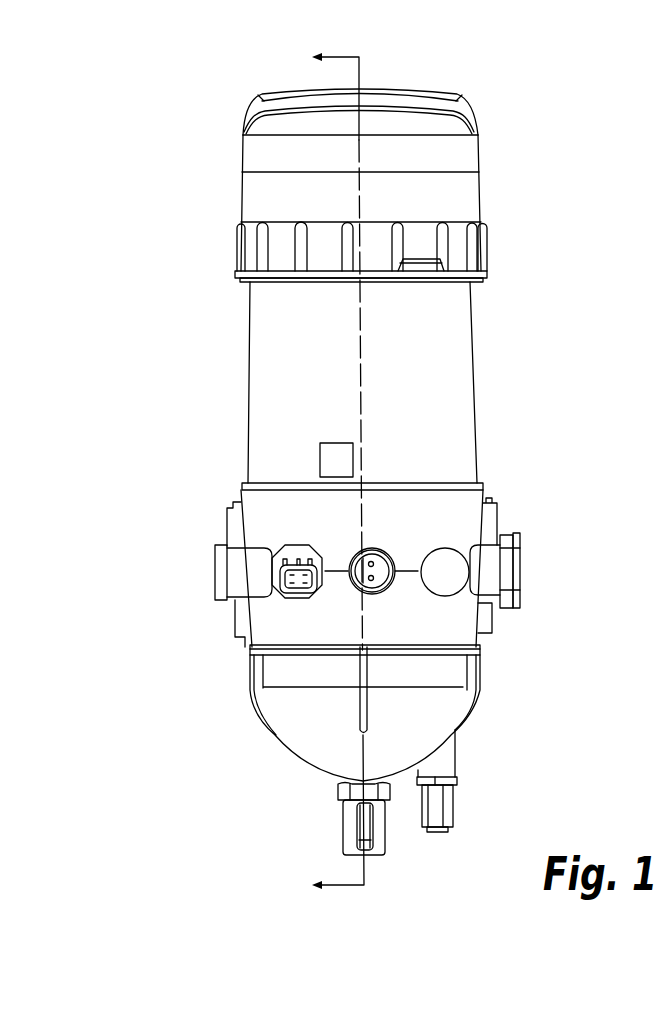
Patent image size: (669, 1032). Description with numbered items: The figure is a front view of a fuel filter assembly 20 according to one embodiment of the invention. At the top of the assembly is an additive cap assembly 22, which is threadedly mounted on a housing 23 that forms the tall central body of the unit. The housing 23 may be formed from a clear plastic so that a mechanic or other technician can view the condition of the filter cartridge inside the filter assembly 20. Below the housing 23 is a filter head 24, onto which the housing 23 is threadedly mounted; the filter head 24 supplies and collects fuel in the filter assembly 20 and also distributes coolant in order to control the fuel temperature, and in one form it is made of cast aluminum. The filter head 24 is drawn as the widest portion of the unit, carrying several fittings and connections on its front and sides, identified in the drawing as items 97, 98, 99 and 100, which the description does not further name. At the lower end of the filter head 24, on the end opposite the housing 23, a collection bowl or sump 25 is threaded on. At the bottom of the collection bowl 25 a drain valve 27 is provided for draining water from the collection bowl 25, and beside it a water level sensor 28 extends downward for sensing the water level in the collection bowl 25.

The filter assembly 20 is at (397, 473).
The additive cap assembly 22 is at (478, 180).
The housing 23 is at (475, 367).
The filter head 24 is at (477, 500).
The collection bowl 25 is at (465, 680).
The drain valve 27 is at (345, 830).
The water level sensor 28 is at (453, 807).
The electrical connector 97 is at (291, 598).
The sensor 98 is at (380, 568).
The port 99 is at (450, 580).
The fitting 100 is at (520, 548).